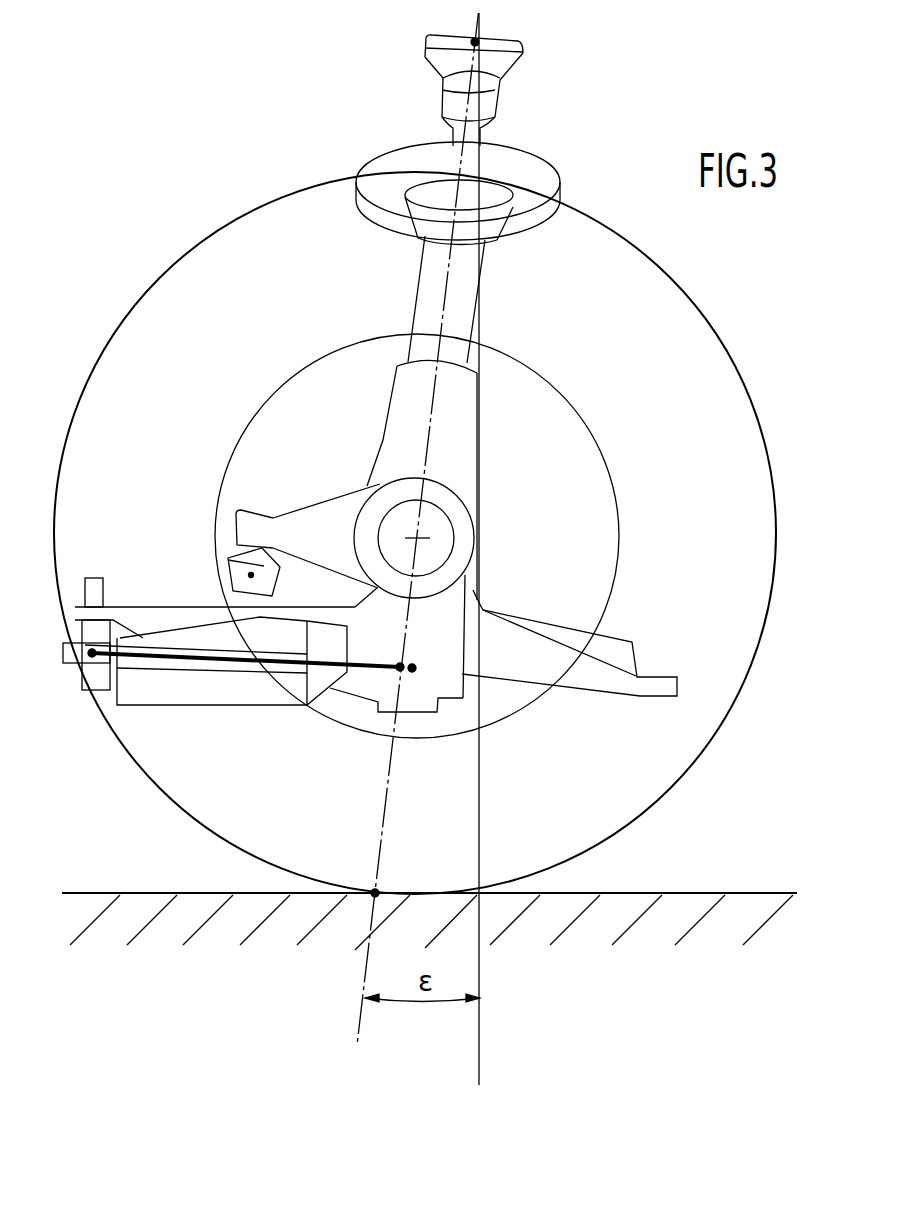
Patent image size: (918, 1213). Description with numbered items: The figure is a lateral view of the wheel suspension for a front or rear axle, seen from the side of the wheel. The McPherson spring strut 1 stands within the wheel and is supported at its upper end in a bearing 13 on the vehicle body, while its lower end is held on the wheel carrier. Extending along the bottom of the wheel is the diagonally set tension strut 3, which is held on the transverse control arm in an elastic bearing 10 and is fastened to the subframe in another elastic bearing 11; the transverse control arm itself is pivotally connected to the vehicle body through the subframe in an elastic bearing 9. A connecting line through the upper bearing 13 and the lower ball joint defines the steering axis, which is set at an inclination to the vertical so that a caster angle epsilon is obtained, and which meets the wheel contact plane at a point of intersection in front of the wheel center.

The McPherson spring strut 1 is at (470, 288).
The tension strut 3 is at (235, 665).
The elastic bearing 9 is at (372, 703).
The elastic bearing 10 is at (373, 698).
The elastic bearing 11 is at (92, 653).
The bearing 13 is at (517, 58).